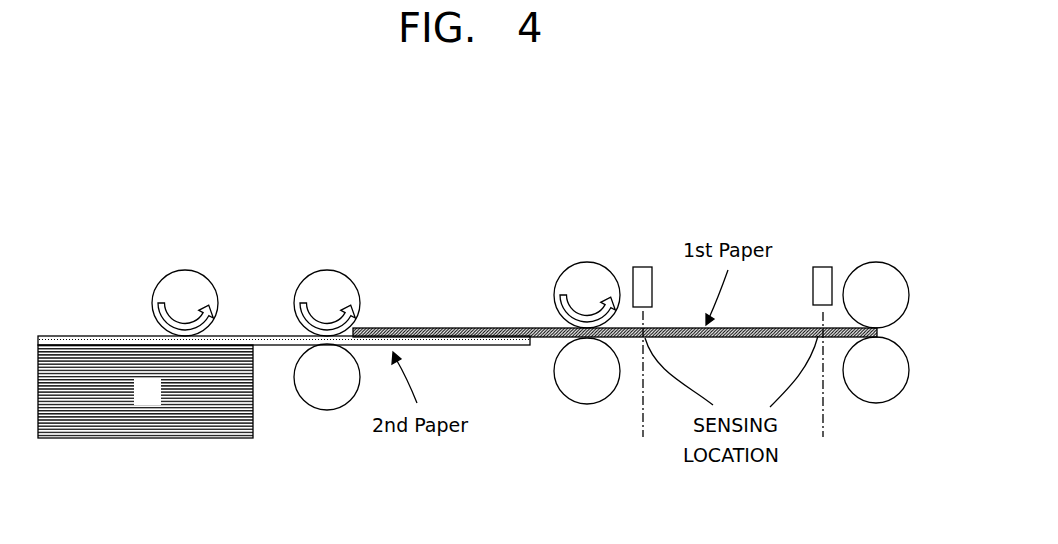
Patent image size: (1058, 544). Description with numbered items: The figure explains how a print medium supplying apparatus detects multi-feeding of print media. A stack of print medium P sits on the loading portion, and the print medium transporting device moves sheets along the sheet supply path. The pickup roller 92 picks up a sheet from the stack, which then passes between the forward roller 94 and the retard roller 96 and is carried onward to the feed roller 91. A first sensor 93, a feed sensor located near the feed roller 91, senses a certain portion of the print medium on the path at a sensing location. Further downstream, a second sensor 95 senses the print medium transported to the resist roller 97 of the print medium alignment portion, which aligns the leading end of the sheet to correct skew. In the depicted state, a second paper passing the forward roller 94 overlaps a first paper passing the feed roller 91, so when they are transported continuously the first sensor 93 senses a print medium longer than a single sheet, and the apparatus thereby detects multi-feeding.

The feed roller 91 is at (586, 262).
The pickup roller 92 is at (184, 269).
The first sensor 93 is at (642, 266).
The forward roller 94 is at (327, 269).
The second sensor 95 is at (823, 266).
The retard roller 96 is at (326, 410).
The resist roller 97 is at (875, 262).
The print medium P is at (145, 391).